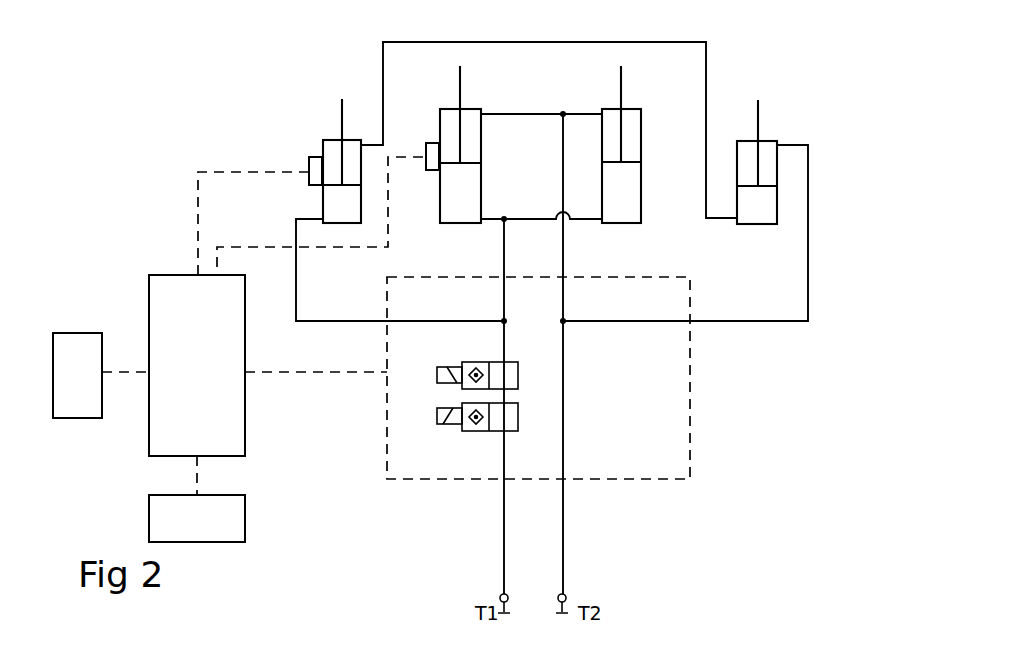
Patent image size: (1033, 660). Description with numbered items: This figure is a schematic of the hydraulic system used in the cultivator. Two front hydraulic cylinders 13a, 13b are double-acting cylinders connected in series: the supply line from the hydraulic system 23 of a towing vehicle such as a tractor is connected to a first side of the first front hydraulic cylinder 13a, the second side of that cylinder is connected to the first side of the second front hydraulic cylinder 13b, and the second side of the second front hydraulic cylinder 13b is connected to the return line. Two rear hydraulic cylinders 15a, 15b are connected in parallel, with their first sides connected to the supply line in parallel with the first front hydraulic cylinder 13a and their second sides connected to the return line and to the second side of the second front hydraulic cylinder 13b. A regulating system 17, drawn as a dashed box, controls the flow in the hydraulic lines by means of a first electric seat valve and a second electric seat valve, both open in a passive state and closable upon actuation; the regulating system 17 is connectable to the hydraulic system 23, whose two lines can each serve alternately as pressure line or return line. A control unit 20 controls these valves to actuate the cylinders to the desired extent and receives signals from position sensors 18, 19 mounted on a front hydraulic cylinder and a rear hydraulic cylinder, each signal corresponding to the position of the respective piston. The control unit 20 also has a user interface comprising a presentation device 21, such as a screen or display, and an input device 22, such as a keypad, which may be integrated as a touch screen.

The first front hydraulic cylinder 13a is at (323, 202).
The second front hydraulic cylinder 13b is at (778, 141).
The first rear hydraulic cylinder 15a is at (481, 177).
The second rear hydraulic cylinder 15b is at (641, 162).
The regulating system 17 is at (742, 428).
The position sensor 18 is at (309, 172).
The position sensor 19 is at (422, 145).
The control unit 20 is at (197, 365).
The presentation device 21 is at (77, 375).
The input device 22 is at (197, 518).
The hydraulic system 23 is at (590, 586).